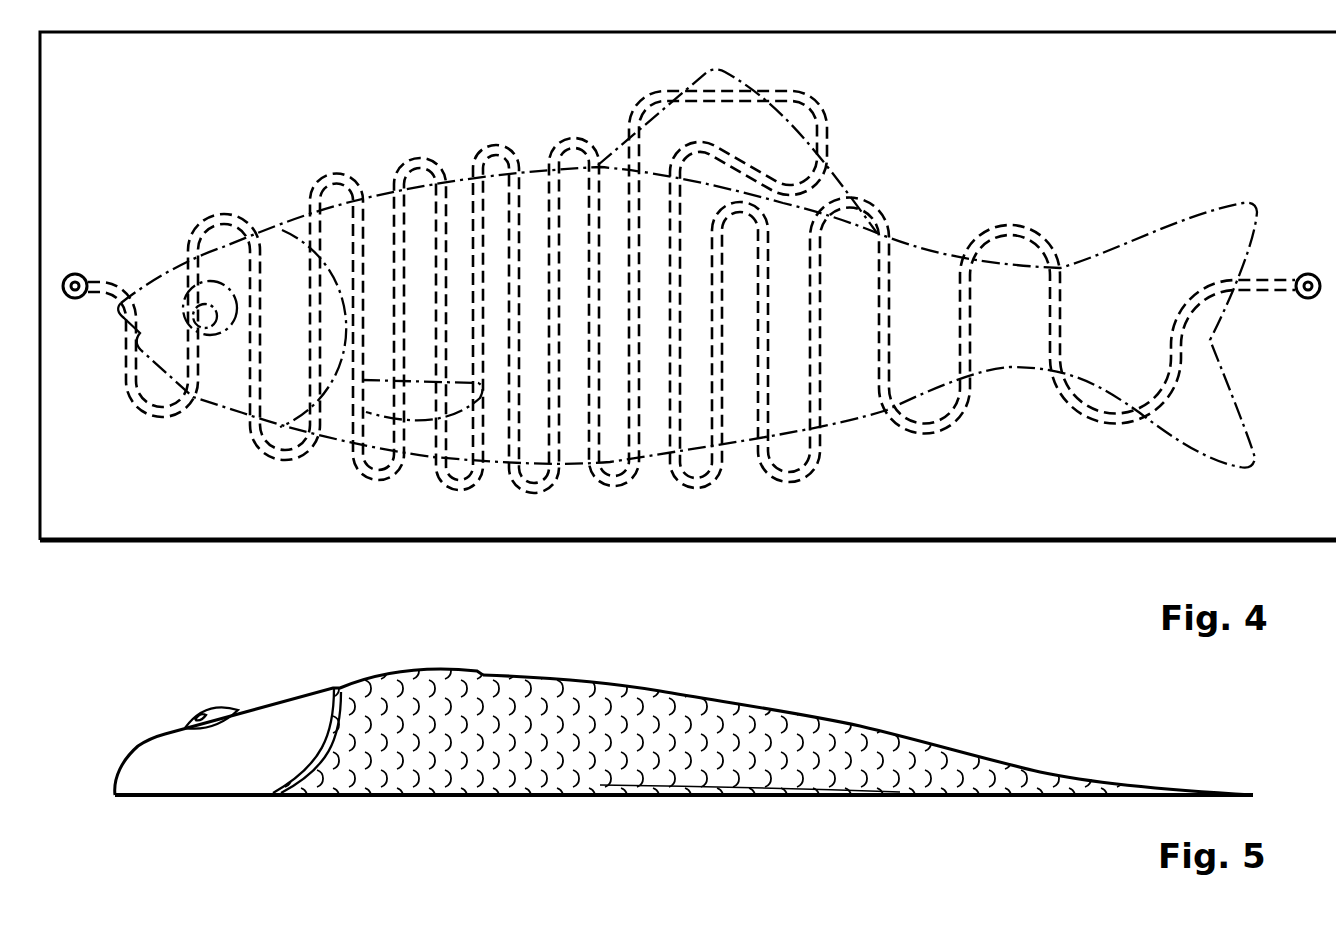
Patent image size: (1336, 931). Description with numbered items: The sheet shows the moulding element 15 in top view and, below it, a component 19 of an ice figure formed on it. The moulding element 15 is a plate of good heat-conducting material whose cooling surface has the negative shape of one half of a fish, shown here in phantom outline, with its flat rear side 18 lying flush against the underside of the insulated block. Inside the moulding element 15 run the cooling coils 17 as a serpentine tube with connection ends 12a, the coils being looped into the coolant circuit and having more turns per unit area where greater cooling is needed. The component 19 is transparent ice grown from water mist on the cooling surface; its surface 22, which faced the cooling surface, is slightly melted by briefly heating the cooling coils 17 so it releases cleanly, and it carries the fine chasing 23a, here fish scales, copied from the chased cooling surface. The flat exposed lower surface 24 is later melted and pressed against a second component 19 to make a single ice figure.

In FIG. 4, the electrical terminal 12a is at (75, 272).
In FIG. 4, the moulding element 15 is at (1087, 541).
In FIG. 4, the cooling coils 17 is at (540, 493).
In FIG. 4, the rear side of the cooling surface 18 is at (867, 512).
In FIG. 5, the component of an ice figure 19 is at (684, 740).
In FIG. 5, the surface of the component 22 is at (840, 722).
In FIG. 5, the fine chasing of the surface 23a is at (620, 700).
In FIG. 5, the exposed lower surface 24 is at (548, 798).